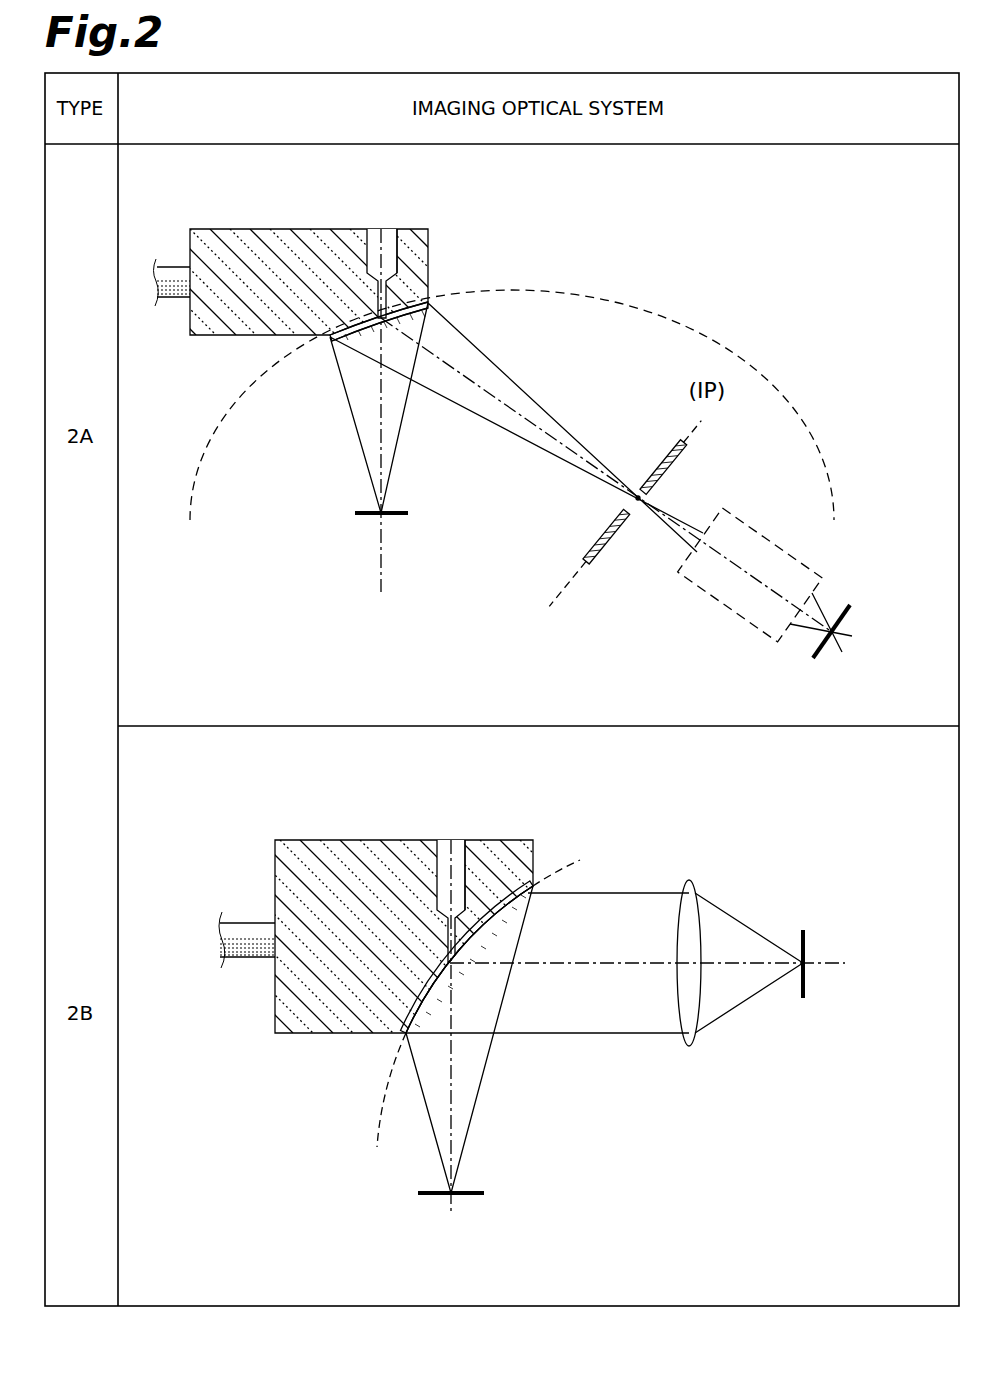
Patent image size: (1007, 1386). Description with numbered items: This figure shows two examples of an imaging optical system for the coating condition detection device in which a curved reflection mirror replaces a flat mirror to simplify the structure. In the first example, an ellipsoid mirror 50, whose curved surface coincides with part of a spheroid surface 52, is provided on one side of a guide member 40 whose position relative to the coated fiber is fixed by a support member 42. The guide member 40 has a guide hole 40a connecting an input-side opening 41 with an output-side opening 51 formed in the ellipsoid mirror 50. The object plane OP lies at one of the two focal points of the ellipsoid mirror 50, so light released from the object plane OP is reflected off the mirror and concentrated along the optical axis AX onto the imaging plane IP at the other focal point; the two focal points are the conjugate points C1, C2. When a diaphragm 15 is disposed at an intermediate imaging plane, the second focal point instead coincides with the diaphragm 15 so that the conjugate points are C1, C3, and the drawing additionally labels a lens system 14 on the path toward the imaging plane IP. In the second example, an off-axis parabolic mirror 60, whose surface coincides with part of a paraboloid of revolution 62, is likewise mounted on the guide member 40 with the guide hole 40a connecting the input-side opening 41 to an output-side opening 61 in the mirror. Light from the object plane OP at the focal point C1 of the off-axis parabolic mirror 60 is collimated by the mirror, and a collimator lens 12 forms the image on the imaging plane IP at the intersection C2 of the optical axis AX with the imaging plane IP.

The collimator lens 12 is at (688, 880).
The lens system 14 is at (734, 618).
The diaphragm 15 is at (673, 442).
The guide member 40 is at (292, 240).
The guide hole 40a is at (392, 250).
The input-side opening 41 is at (379, 228).
The support member 42 is at (166, 270).
The ellipsoid mirror 50 is at (430, 302).
The output-side opening 51 is at (345, 345).
The spheroid surface 52 is at (666, 315).
The off-axis parabolic mirror 60 is at (536, 886).
The output-side opening 61 is at (456, 962).
The paraboloid of revolution 62 is at (376, 1130).
The conjugate point C1 is at (380, 514).
The conjugate point C2 is at (832, 632).
The conjugate point C3 is at (638, 500).
The imaging plane IP is at (842, 612).
The object plane OP is at (384, 514).
The optical axis AX is at (531, 422).